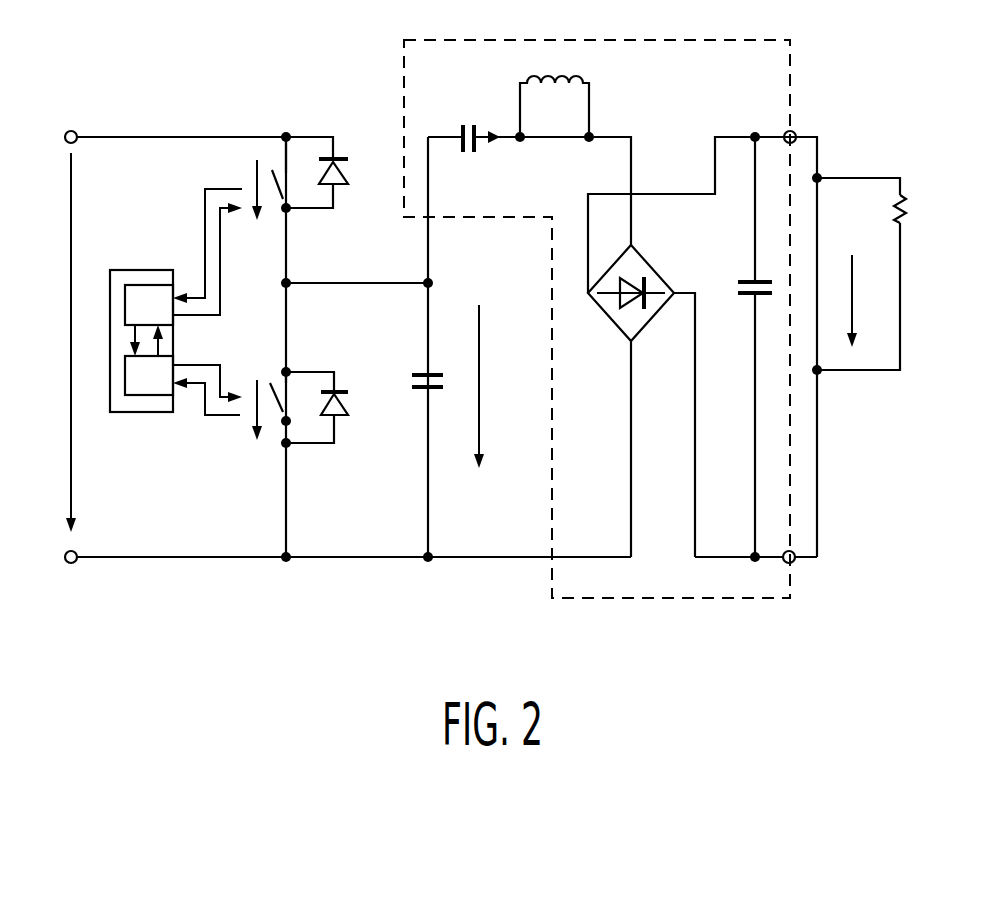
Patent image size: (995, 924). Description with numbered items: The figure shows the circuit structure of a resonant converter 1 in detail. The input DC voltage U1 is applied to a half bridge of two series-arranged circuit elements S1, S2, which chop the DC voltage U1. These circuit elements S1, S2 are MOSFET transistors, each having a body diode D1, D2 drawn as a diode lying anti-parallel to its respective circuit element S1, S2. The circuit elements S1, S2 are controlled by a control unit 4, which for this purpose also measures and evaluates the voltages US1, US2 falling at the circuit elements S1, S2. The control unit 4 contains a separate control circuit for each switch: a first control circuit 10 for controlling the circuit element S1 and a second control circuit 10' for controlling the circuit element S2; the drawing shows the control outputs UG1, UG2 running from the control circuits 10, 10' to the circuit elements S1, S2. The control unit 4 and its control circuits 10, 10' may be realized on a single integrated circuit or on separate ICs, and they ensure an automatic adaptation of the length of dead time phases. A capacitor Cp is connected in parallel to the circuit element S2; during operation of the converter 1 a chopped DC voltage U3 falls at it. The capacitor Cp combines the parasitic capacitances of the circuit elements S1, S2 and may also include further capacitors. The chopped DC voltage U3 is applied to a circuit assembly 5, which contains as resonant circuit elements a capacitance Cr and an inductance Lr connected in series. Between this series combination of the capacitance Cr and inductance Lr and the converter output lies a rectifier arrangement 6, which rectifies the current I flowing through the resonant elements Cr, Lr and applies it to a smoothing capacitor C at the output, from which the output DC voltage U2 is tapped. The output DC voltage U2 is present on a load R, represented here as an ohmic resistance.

The converter 1 is at (431, 402).
The control unit 4 is at (136, 331).
The circuit assembly 5 is at (720, 600).
The rectifier arrangement 6 is at (615, 325).
The first control circuit 10 is at (126, 294).
The second control circuit 10' is at (147, 412).
The circuit element S1 is at (280, 210).
The circuit element S2 is at (282, 428).
The body diode D1 is at (348, 176).
The body diode D2 is at (340, 420).
The capacitor Cp is at (418, 372).
The capacitance Cr is at (463, 125).
The inductance Lr is at (540, 80).
The smoothing capacitor C is at (748, 278).
The load R is at (893, 206).
The current I is at (497, 145).
The input DC voltage U1 is at (58, 342).
The output DC voltage U2 is at (853, 302).
The chopped DC voltage U3 is at (497, 386).
The voltage US1 is at (252, 178).
The voltage US2 is at (250, 418).
The gate control signal UG1 is at (222, 301).
The gate control signal UG2 is at (222, 363).